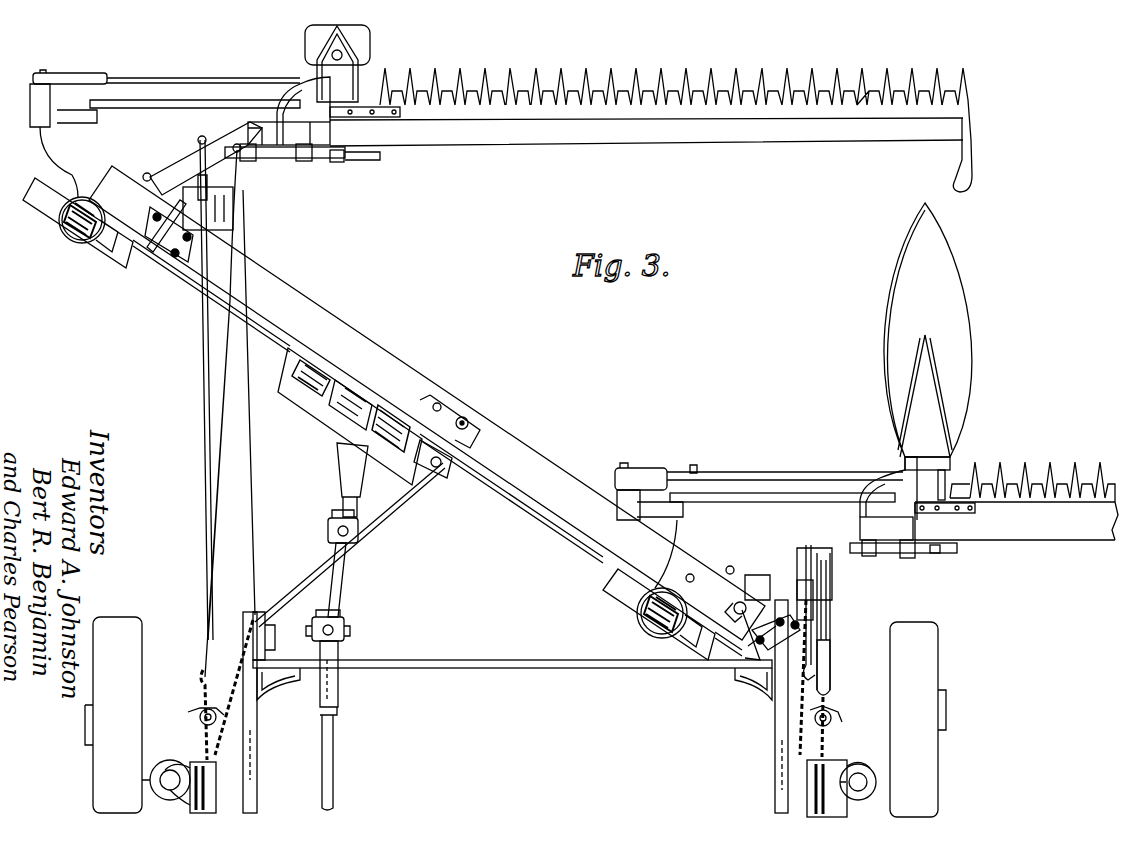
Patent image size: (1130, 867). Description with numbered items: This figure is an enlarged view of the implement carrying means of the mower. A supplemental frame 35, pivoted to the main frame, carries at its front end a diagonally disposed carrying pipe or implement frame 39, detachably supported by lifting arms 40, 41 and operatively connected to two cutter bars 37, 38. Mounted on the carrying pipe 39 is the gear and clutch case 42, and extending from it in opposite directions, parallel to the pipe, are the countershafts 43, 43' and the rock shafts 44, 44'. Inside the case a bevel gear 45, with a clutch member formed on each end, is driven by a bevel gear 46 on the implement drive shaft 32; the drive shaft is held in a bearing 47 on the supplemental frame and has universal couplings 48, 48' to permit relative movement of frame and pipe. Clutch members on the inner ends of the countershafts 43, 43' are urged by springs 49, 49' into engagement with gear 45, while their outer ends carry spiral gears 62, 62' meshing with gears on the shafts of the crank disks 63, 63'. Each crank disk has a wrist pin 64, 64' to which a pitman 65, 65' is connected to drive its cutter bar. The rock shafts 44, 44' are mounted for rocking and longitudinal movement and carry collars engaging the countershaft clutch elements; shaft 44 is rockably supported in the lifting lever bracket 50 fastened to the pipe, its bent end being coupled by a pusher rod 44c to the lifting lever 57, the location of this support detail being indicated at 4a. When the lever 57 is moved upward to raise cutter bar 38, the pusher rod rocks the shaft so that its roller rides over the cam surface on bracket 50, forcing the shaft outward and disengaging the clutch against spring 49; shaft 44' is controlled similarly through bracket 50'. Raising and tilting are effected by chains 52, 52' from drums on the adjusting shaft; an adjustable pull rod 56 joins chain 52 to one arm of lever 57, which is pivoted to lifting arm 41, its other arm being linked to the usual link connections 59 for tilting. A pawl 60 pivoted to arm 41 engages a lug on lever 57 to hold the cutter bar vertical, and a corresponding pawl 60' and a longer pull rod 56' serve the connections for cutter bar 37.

The implement drive shaft 32 is at (335, 745).
The supplemental frame 35 is at (258, 740).
The cutter bar 37 is at (482, 147).
The cutter bar 38 is at (1005, 538).
The carrying pipe 39 is at (520, 445).
The lifting arm 40 is at (268, 640).
The lifting arm 41 is at (815, 612).
The gear and clutch case 42 is at (340, 410).
The countershaft 43 is at (581, 542).
The countershaft 43' is at (205, 293).
The rock shaft 44 is at (581, 548).
The rock shaft 44' is at (211, 299).
The pusher rod 44c is at (735, 604).
The bevel gear 45 is at (352, 465).
The bevel gear 46 is at (360, 430).
The bearing 47 is at (335, 690).
The universal coupling 48 is at (348, 625).
The universal coupling 48' is at (320, 528).
The spring 49 is at (433, 478).
The spring 49' is at (340, 416).
The frame member 4a is at (770, 577).
The lifting lever bracket 50 is at (742, 658).
The lifting lever bracket 50' is at (142, 241).
The chain 52 is at (800, 678).
The chain 52' is at (206, 690).
The adjustable pull rod 56 is at (844, 658).
The pull rod 56' is at (196, 413).
The lifting lever 57 is at (832, 565).
The link connections 59 is at (890, 560).
The pawl 60 is at (811, 612).
The pawl 60' is at (186, 390).
The spiral gear 62 is at (657, 614).
The spiral gear 62' is at (78, 223).
The crank disk 63 is at (651, 539).
The crank disk 63' is at (87, 140).
The wrist pin 64 is at (759, 470).
The wrist pin 64' is at (166, 87).
The pitman 65 is at (782, 506).
The pitman 65' is at (195, 116).